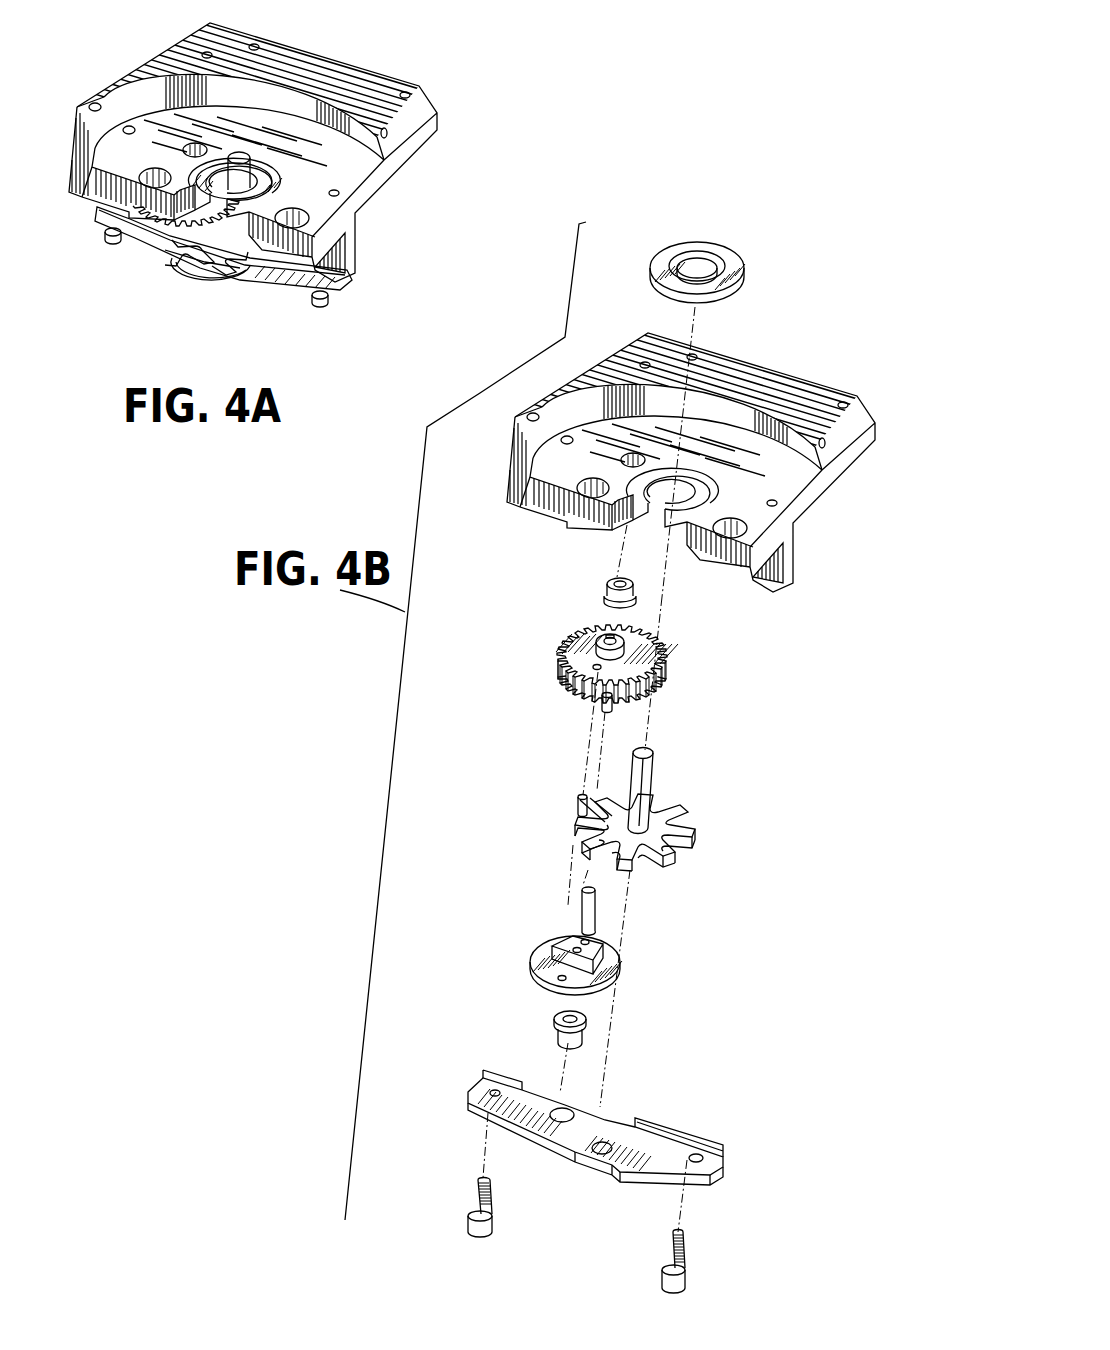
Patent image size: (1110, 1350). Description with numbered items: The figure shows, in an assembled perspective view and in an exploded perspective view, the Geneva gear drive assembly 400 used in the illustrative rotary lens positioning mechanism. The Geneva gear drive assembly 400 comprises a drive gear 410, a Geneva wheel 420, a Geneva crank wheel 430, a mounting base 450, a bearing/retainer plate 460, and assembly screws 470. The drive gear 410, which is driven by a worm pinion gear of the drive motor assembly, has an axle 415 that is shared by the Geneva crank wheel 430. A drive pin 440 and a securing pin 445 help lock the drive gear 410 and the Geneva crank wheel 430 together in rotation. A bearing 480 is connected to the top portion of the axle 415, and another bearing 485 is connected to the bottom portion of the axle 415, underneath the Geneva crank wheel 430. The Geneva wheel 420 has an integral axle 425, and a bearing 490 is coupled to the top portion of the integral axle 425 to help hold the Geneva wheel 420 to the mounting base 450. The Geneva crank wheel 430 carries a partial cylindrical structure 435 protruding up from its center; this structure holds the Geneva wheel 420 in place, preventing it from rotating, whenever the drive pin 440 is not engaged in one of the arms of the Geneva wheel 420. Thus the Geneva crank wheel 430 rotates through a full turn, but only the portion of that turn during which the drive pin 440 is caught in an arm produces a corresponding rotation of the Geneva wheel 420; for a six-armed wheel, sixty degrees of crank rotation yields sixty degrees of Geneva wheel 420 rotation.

In FIG. 4A, the Geneva gear drive assembly 400 is at (332, 52).
In FIG. 4A, the drive gear 410 is at (186, 212).
In FIG. 4B, the drive gear 410 is at (557, 664).
In FIG. 4B, the axle 415 is at (614, 703).
In FIG. 4A, the Geneva wheel 420 is at (206, 268).
In FIG. 4B, the Geneva wheel 420 is at (675, 850).
In FIG. 4A, the integral axle 425 is at (239, 171).
In FIG. 4B, the integral axle 425 is at (655, 788).
In FIG. 4A, the Geneva crank wheel 430 is at (170, 258).
In FIG. 4B, the Geneva crank wheel 430 is at (530, 975).
In FIG. 4B, the partial cylindrical structure 435 is at (560, 938).
In FIG. 4B, the drive pin 440 is at (578, 803).
In FIG. 4B, the securing pin 445 is at (594, 908).
In FIG. 4A, the mounting base 450 is at (400, 82).
In FIG. 4B, the mounting base 450 is at (758, 368).
In FIG. 4A, the bearing/retainer plate 460 is at (286, 290).
In FIG. 4B, the bearing/retainer plate 460 is at (700, 1166).
In FIG. 4A, the assembly screws 470 is at (113, 241).
In FIG. 4B, the assembly screws 470 is at (468, 1218).
In FIG. 4B, the bearing 480 is at (600, 592).
In FIG. 4B, the bearing 485 is at (555, 1022).
In FIG. 4A, the bearing 490 is at (285, 178).
In FIG. 4B, the bearing 490 is at (747, 268).